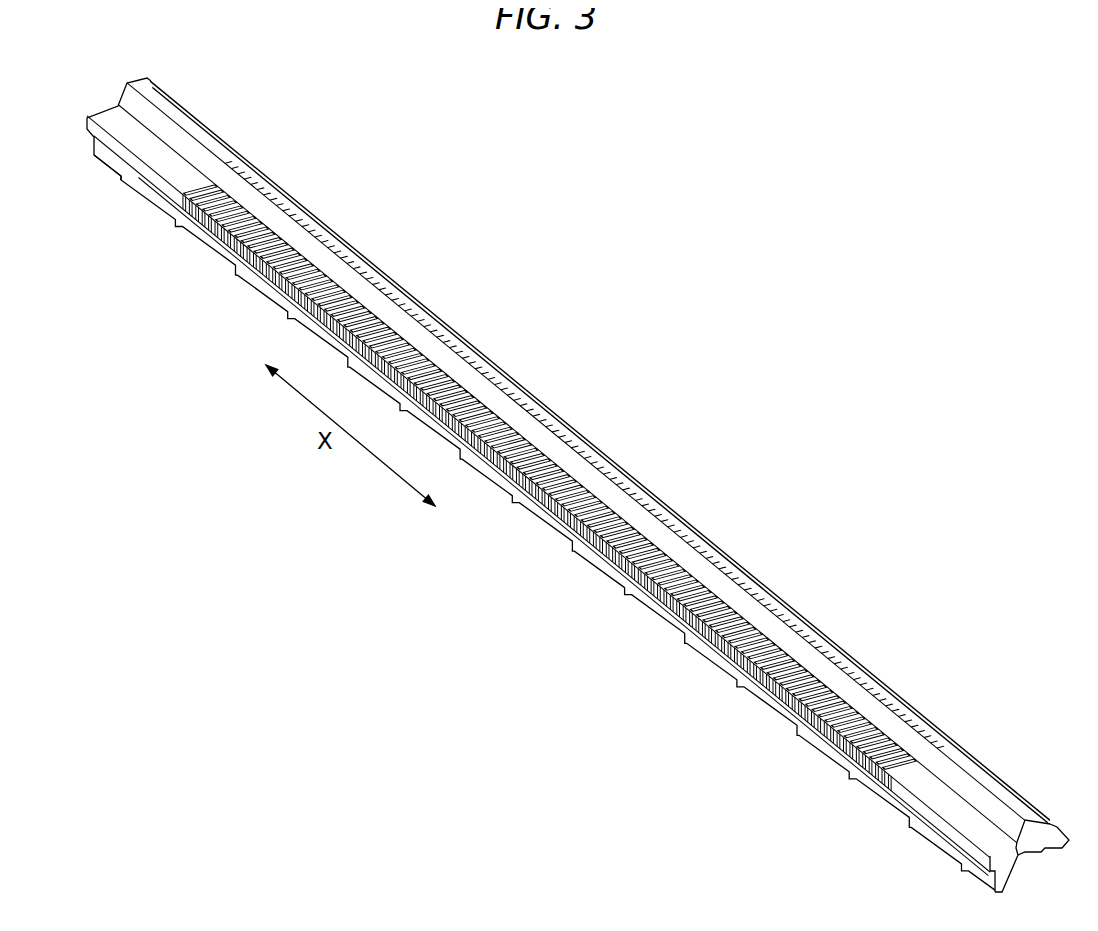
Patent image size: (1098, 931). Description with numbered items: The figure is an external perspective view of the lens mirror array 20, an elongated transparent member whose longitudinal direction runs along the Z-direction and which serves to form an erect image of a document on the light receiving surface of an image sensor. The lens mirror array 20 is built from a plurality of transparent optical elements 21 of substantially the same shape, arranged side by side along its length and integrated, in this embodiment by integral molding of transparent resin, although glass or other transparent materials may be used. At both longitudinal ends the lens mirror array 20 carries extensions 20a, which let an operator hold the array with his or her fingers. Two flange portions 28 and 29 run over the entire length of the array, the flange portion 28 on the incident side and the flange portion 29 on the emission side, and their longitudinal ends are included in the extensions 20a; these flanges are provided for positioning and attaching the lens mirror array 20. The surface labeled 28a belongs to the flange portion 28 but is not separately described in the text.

The lens mirror array 20 is at (691, 472).
The extension 20a is at (100, 108).
The optical element 21 is at (217, 234).
The flange portion 28 is at (930, 834).
The side surface 28a is at (538, 509).
The flange portion 29 is at (1058, 826).